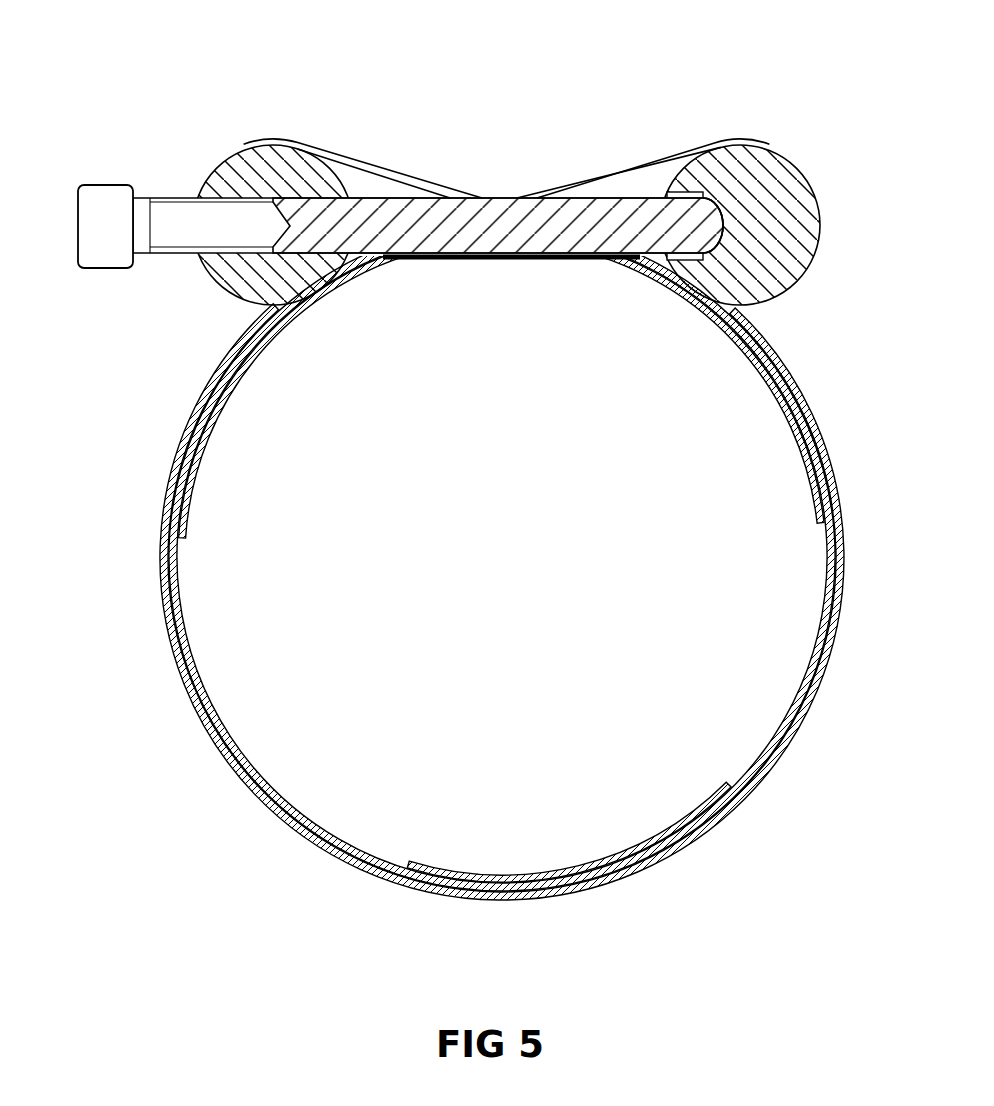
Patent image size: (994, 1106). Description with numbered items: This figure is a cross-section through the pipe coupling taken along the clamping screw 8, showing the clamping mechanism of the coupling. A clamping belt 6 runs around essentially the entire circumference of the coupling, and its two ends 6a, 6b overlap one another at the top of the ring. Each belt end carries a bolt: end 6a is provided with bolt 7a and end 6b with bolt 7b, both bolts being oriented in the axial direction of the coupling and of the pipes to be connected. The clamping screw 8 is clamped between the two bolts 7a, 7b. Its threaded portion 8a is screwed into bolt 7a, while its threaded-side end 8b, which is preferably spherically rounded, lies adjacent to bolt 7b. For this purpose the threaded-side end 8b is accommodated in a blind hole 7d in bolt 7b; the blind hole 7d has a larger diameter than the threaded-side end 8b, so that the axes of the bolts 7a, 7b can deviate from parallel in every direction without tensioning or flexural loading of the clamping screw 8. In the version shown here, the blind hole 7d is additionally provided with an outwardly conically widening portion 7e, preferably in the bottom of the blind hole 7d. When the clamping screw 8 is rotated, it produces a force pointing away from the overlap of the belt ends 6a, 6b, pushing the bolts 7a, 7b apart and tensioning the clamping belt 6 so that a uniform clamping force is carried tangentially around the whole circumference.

The clamping belt 6 is at (182, 443).
The end of clamping belt 6a is at (355, 160).
The end of clamping belt 6b is at (670, 162).
The bolt 7a is at (262, 165).
The bolt 7b is at (750, 190).
The blind hole 7d is at (687, 190).
The outwardly conically widening portion 7e is at (717, 242).
The clamping screw 8 is at (100, 178).
The threaded portion 8a is at (207, 226).
The threaded-side end 8b is at (668, 222).